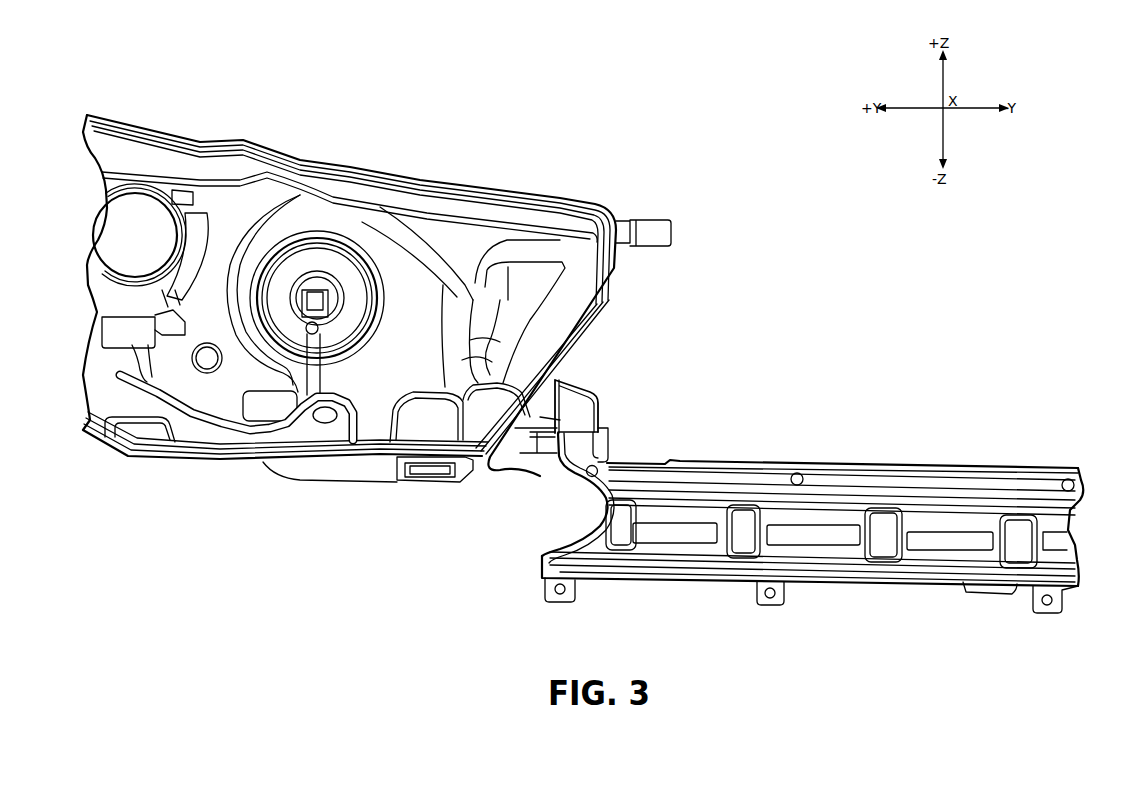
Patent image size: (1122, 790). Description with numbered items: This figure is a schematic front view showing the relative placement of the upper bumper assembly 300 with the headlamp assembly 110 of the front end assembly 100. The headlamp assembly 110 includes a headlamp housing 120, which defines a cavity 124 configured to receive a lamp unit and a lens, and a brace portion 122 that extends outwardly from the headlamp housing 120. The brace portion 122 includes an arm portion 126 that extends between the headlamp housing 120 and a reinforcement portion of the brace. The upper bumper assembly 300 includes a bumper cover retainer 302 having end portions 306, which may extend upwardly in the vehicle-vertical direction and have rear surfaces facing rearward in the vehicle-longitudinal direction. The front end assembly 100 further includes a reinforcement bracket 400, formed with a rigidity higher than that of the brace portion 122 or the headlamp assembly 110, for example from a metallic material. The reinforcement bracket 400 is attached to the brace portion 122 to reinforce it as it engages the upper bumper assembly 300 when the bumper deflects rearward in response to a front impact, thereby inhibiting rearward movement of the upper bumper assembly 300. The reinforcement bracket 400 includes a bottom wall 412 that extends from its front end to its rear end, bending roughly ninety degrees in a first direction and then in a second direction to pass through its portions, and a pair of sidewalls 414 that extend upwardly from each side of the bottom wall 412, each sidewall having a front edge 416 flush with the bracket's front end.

The front end assembly 100 is at (772, 217).
The headlamp assembly 110 is at (464, 165).
The headlamp housing 120 is at (341, 184).
The cavity 124 is at (469, 230).
The brace portion 122 is at (582, 372).
The arm portion 126 is at (592, 382).
The reinforcement bracket 400 is at (616, 416).
The sidewalls 414 is at (608, 438).
The bottom wall 412 is at (517, 456).
The front edge 416 is at (540, 449).
The upper bumper assembly 300 is at (914, 434).
The bumper cover retainer 302 is at (950, 462).
The end portions 306 is at (560, 505).